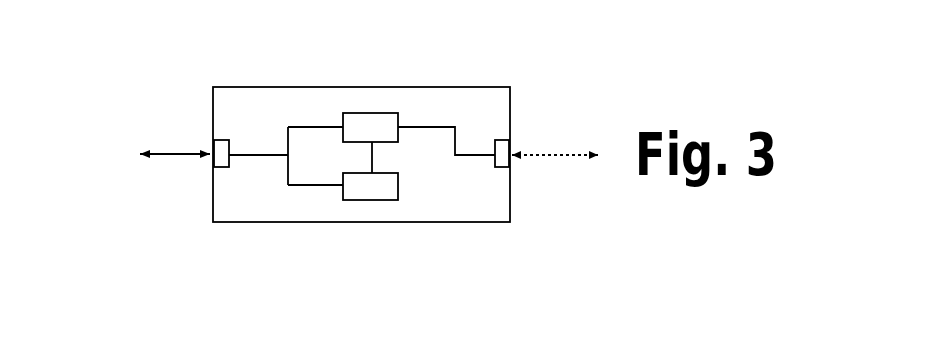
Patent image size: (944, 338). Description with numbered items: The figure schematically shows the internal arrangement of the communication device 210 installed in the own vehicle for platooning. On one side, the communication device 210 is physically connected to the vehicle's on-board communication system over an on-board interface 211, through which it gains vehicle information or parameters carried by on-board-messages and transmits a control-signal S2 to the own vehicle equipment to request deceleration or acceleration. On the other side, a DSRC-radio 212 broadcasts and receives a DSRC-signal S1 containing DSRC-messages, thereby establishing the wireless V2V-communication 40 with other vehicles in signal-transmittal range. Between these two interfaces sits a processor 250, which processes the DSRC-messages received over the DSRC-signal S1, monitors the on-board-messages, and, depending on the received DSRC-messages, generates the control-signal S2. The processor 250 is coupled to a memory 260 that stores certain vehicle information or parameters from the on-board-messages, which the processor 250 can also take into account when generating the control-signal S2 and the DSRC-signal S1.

The communication device 210 is at (215, 222).
The on-board interface 211 is at (217, 140).
The DSRC-radio 212 is at (502, 140).
The processor 250 is at (372, 113).
The memory 260 is at (372, 200).
The wireless V2V-communication 40 is at (553, 155).
The DSRC-signal S1 is at (555, 157).
The control-signal S2 is at (130, 237).